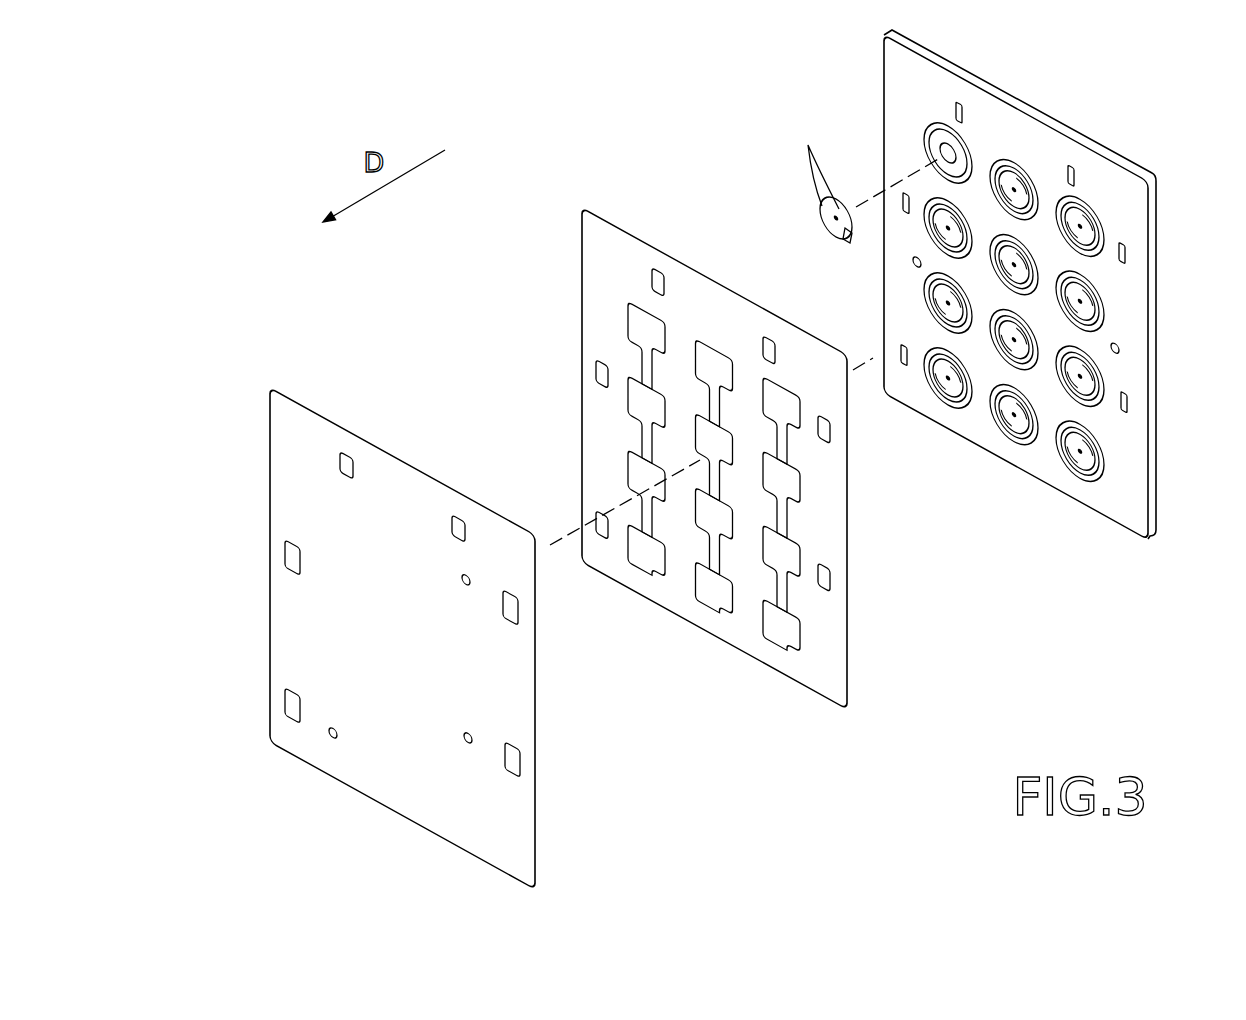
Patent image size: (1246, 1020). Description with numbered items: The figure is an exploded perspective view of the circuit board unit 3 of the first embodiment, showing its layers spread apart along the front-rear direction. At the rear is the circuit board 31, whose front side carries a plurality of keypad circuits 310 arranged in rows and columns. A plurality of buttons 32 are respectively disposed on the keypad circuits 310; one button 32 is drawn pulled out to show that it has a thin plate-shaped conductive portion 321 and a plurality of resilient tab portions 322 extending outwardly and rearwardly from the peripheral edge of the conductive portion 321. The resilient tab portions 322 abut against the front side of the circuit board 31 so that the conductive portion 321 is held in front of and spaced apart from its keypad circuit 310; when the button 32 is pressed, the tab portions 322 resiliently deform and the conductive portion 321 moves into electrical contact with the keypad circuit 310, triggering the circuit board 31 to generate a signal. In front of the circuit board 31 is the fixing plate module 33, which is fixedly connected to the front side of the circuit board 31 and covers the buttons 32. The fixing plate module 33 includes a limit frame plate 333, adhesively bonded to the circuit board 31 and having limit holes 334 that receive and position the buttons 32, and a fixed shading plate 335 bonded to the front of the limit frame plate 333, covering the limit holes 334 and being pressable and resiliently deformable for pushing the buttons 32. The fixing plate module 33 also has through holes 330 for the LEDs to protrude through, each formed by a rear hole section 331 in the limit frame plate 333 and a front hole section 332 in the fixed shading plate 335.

The circuit board unit 3 is at (1160, 179).
The circuit board 31 is at (1157, 200).
The keypad circuits 310 is at (935, 148).
The buttons 32 is at (977, 330).
The conductive portion 321 is at (826, 235).
The resilient tab portions 322 is at (809, 147).
The fixing plate module 33 is at (597, 206).
The rear hole section 331 is at (659, 268).
The limit frame plate 333 is at (580, 253).
The limit holes 334 is at (627, 320).
The fixed shading plate 335 is at (282, 385).
The through holes 330 is at (330, 456).
The front hole section 332 is at (345, 452).